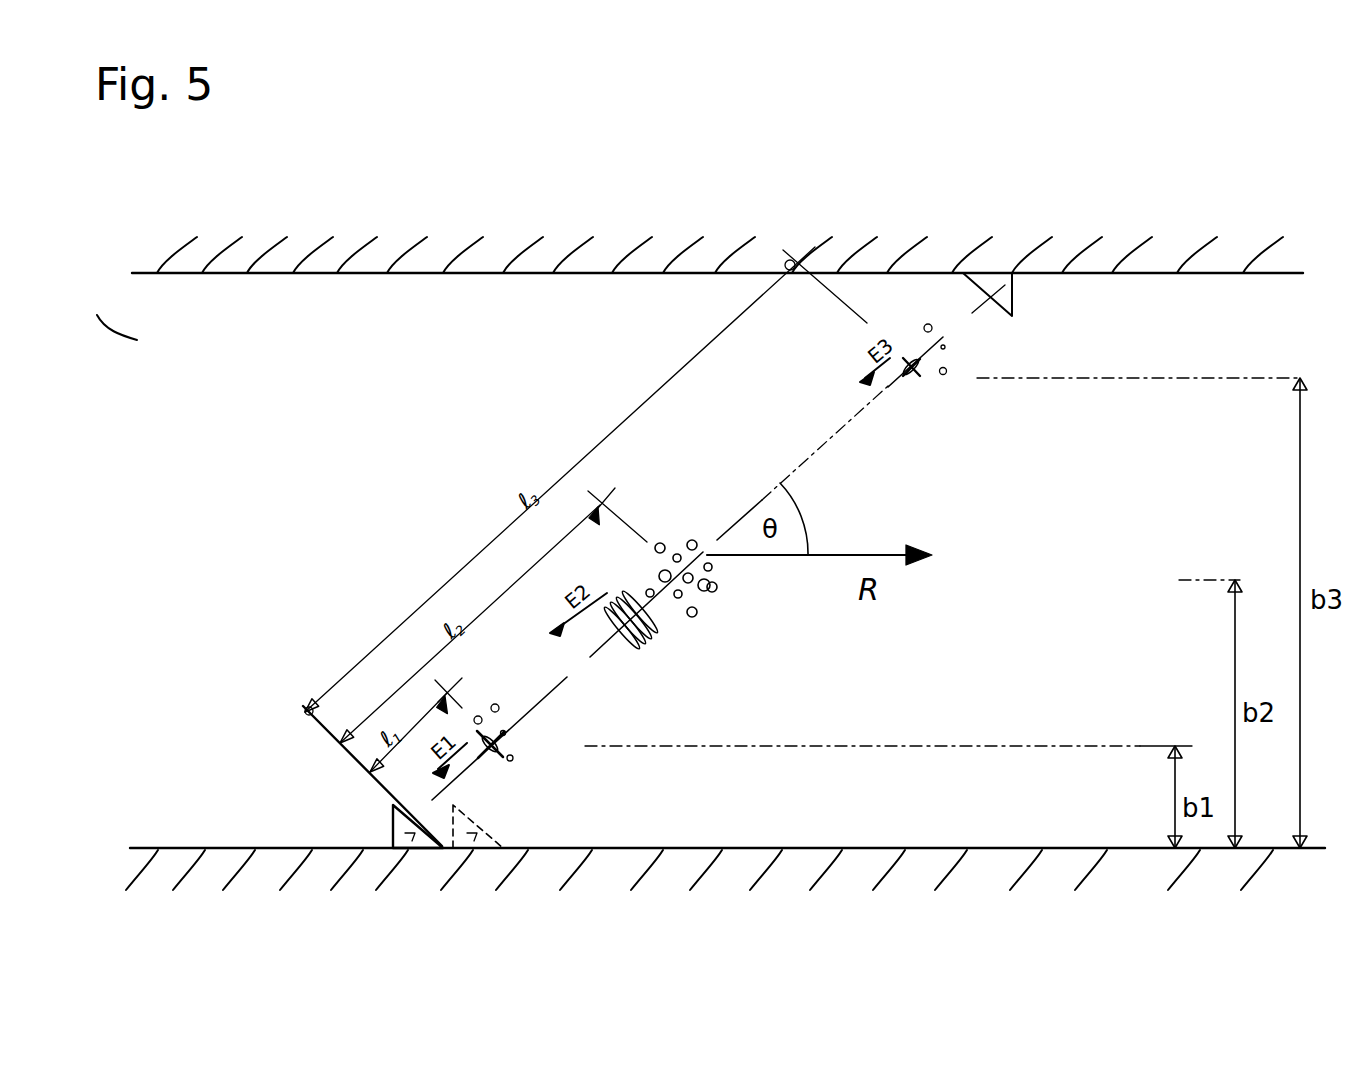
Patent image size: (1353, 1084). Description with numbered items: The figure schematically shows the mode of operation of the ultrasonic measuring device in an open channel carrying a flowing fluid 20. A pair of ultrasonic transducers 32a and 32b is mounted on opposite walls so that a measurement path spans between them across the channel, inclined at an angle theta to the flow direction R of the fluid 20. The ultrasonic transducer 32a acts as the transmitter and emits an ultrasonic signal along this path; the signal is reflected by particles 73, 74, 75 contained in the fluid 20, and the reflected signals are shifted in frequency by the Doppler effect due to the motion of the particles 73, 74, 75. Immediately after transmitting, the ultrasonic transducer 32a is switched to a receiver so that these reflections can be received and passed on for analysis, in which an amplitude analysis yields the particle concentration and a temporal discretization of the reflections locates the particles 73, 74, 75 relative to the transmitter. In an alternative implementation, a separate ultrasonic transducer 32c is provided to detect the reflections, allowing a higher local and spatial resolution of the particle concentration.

The fluid 20 is at (86, 312).
The ultrasonic transducer 32a is at (410, 852).
The ultrasonic transducer 32b is at (988, 280).
The separate ultrasonic transducer 32c is at (474, 852).
The particle 73 is at (522, 735).
The particle 74 is at (691, 610).
The particle 75 is at (948, 350).